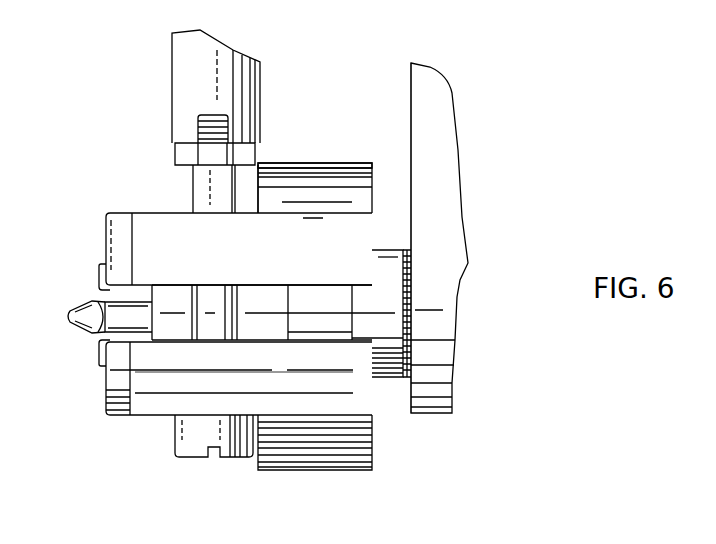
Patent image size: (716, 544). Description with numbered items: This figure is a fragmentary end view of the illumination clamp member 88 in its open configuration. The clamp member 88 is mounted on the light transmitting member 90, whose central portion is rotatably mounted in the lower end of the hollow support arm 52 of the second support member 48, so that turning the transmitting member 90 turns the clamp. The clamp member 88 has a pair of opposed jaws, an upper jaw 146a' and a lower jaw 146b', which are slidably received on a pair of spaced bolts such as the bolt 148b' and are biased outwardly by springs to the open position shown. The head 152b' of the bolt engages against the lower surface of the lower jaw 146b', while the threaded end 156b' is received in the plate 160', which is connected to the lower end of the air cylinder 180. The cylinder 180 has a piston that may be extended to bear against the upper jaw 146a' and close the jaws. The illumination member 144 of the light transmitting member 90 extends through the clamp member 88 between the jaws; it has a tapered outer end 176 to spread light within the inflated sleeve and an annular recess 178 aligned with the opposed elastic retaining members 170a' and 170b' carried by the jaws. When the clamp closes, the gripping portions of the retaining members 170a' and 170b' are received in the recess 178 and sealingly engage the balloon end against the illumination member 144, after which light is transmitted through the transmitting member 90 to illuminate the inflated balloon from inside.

The air cylinder 180 is at (223, 50).
The threaded end 156b' is at (171, 121).
The plate 160' is at (179, 154).
The bolt 148b' is at (187, 189).
The upper jaw 146a' is at (315, 164).
The illumination clamp member 88 is at (350, 158).
The elastic retaining member 170a' is at (201, 251).
The annular recess 178 is at (113, 305).
The tapered outer end 176 is at (83, 313).
The illumination member 144 is at (84, 318).
The elastic retaining member 170b' is at (206, 377).
The light transmitting member 90 is at (157, 348).
The head 152b' is at (214, 458).
The lower jaw 146b' is at (360, 442).
The second support member 48 is at (445, 138).
The hollow support arm 52 is at (440, 190).